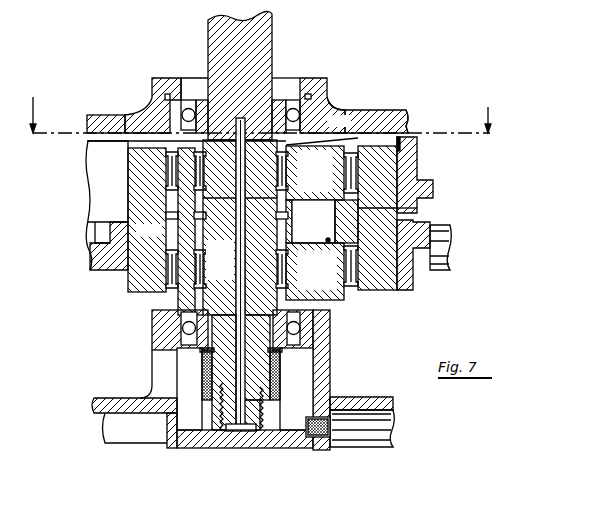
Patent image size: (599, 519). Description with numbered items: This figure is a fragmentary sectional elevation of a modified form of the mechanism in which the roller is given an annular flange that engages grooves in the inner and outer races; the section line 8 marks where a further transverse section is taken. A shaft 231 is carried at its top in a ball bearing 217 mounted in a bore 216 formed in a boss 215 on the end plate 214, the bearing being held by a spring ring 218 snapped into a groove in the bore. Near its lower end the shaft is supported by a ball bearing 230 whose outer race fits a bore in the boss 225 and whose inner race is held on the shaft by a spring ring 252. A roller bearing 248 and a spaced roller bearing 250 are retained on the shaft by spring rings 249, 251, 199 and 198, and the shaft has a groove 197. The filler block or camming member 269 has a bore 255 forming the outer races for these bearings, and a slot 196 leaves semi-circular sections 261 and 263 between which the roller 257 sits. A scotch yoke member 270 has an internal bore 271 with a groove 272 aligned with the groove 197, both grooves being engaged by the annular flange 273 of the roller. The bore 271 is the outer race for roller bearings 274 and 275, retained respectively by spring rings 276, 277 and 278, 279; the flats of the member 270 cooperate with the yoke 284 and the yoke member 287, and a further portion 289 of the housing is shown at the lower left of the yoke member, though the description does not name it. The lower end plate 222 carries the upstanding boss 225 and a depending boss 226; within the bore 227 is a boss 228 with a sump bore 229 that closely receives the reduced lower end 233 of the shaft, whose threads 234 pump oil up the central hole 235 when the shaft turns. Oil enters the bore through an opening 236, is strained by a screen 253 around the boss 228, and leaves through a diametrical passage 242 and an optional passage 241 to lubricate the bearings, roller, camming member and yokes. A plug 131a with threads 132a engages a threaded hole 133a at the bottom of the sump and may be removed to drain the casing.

The section line 8- 8 is at (259, 105).
The plug 131a is at (385, 435).
The threads 132a is at (338, 440).
The threaded hole 133a is at (323, 438).
The slot 196 is at (329, 269).
The groove 197 is at (206, 226).
The spring ring 198 is at (278, 303).
The spring ring 199 is at (341, 121).
The end plate 214 is at (366, 110).
The boss 215 is at (150, 87).
The bore 216 is at (309, 93).
The ball bearing 217 is at (328, 105).
The spring ring 218 is at (168, 94).
The end plate 222 is at (117, 412).
The boss 225 is at (337, 367).
The depending boss 226 is at (177, 443).
The bore 227 is at (303, 387).
The boss 228 is at (275, 432).
The sump bore 229 is at (233, 431).
The ball bearing 230 is at (303, 327).
The shaft 231 is at (274, 53).
The lower end 233 is at (230, 373).
The threads 234 is at (263, 428).
The central hole 235 is at (241, 342).
The opening 236 is at (163, 392).
The passage 241 is at (258, 163).
The diametrical passage 242 is at (123, 124).
The roller bearing 248 is at (310, 173).
The spring ring 249 is at (313, 180).
The roller bearing 250 is at (203, 266).
The spring ring 251 is at (310, 256).
The spring ring 252 is at (202, 352).
The screen 253 is at (200, 402).
The bore 255 is at (313, 283).
The roller 257 is at (417, 212).
The semi-circular section 261 is at (407, 118).
The semi-circular section 263 is at (340, 283).
The filler block or camming member 269 is at (166, 215).
The scotch yoke member 270 is at (182, 176).
The internal bore 271 is at (97, 252).
The groove 272 is at (168, 228).
The annular flange 273 is at (336, 230).
The roller bearing 274 is at (165, 294).
The roller bearing 275 is at (166, 170).
The spring ring 276 is at (178, 300).
The spring ring 277 is at (120, 293).
The spring ring 278 is at (182, 200).
The spring ring 279 is at (200, 147).
The yoke 284 is at (418, 163).
The yoke member 287 is at (413, 290).
The housing foot 289 is at (110, 272).